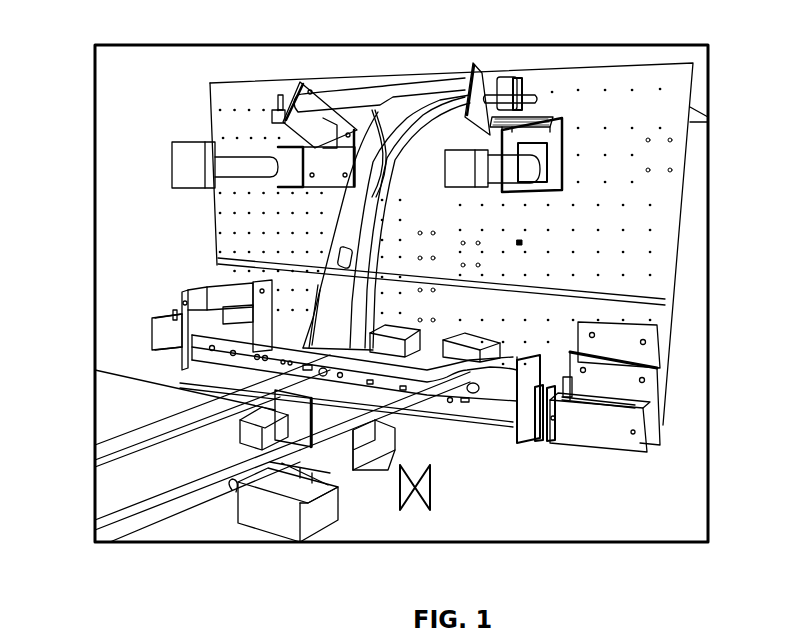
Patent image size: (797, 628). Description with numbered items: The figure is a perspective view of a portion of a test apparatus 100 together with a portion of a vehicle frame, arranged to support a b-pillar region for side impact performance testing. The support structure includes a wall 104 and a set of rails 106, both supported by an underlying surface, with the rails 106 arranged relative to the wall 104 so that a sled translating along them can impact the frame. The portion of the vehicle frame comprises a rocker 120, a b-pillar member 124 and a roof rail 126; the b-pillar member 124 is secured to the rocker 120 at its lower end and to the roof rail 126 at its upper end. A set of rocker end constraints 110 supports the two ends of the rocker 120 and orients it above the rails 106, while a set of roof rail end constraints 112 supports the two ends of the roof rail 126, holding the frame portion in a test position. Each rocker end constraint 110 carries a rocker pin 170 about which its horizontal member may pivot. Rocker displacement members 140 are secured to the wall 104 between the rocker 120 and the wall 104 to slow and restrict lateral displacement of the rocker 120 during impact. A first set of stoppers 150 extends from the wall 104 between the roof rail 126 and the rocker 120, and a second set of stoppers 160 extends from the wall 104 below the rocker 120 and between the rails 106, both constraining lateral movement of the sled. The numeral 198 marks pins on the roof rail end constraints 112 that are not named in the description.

The test apparatus 100 is at (680, 99).
The wall 104 is at (655, 203).
The set of rails 106 is at (305, 527).
The set of rocker end constraints 110 is at (162, 338).
The set of roof rail end constraints 112 is at (290, 99).
The rocker 120 is at (270, 350).
The b-pillar member 124 is at (383, 198).
The roof rail 126 is at (355, 100).
The rocker displacement members 140 is at (400, 330).
The first set of stoppers 150 is at (186, 186).
The second set of stoppers 160 is at (278, 408).
The rocker pin 170 is at (168, 326).
The locating pin 198 is at (272, 110).